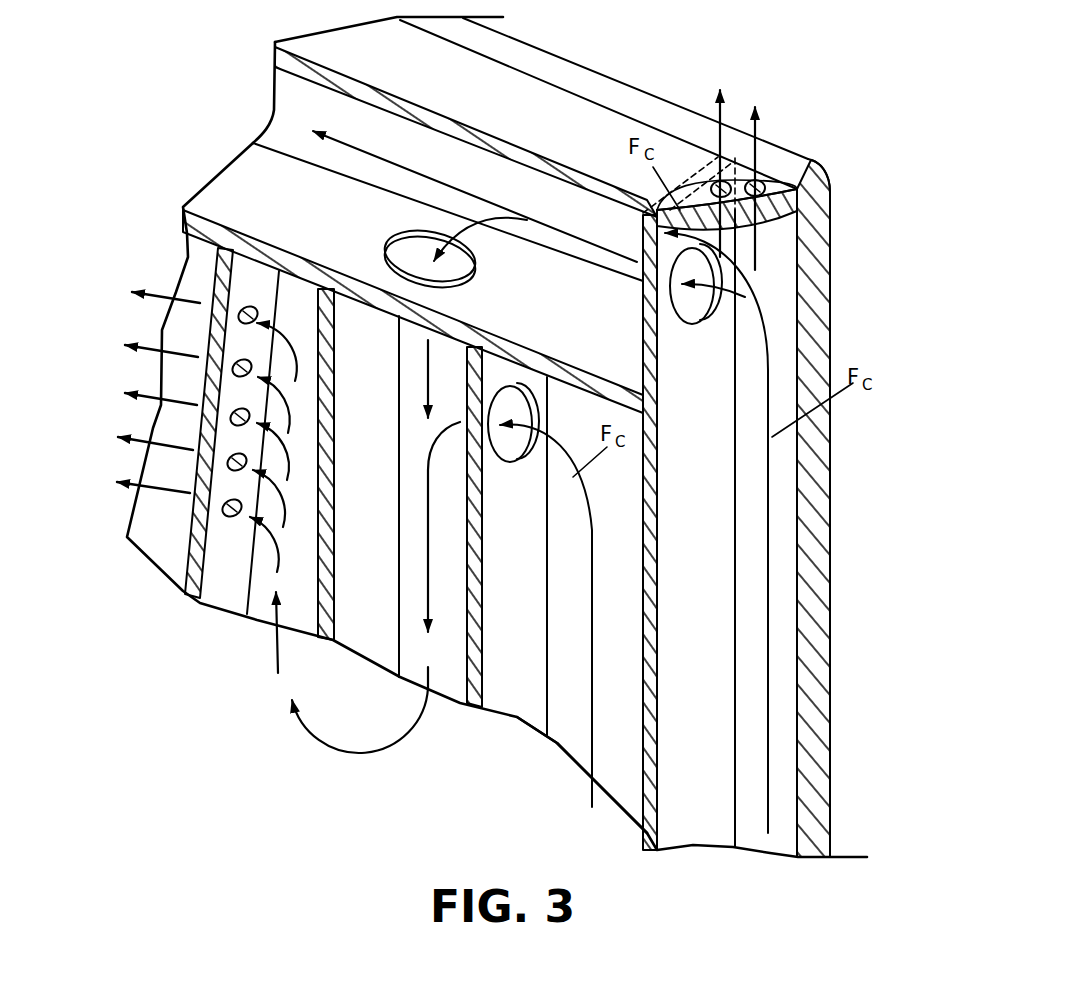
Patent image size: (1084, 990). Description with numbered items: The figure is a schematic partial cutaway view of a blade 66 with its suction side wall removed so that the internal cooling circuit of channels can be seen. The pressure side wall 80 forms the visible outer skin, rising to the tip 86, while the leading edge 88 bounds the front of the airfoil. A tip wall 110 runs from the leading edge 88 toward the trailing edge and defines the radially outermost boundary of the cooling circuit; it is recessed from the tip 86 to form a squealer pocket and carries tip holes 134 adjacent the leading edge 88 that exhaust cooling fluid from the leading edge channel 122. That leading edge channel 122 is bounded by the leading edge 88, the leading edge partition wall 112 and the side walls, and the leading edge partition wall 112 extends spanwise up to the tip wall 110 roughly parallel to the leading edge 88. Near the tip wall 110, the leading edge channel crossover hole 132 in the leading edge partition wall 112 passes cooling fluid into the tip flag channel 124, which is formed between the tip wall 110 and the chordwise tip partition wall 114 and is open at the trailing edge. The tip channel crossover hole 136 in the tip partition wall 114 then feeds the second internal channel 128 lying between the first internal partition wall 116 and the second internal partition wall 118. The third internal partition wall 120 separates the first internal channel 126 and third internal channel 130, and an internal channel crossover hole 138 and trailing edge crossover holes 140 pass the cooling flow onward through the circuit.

The blade 66 is at (882, 166).
The pressure side wall 80 is at (628, 84).
The tip 86 is at (806, 160).
The leading edge 88 is at (833, 530).
The tip wall 110 is at (531, 122).
The leading edge partition wall 112 is at (718, 531).
The tip partition wall 114 is at (315, 234).
The first internal partition wall 116 is at (528, 584).
The second internal partition wall 118 is at (378, 534).
The third internal partition wall 120 is at (242, 579).
The leading edge channel 122 is at (787, 684).
The tip flag channel 124 is at (276, 128).
The first internal channel 126 is at (568, 733).
The second internal channel 128 is at (441, 694).
The third internal channel 130 is at (257, 607).
The leading edge channel crossover hole 132 is at (680, 325).
The tip holes 134 is at (800, 191).
The tip channel crossover hole 136 is at (478, 264).
The internal channel crossover hole 138 is at (494, 462).
The trailing edge crossover holes 140 is at (230, 464).